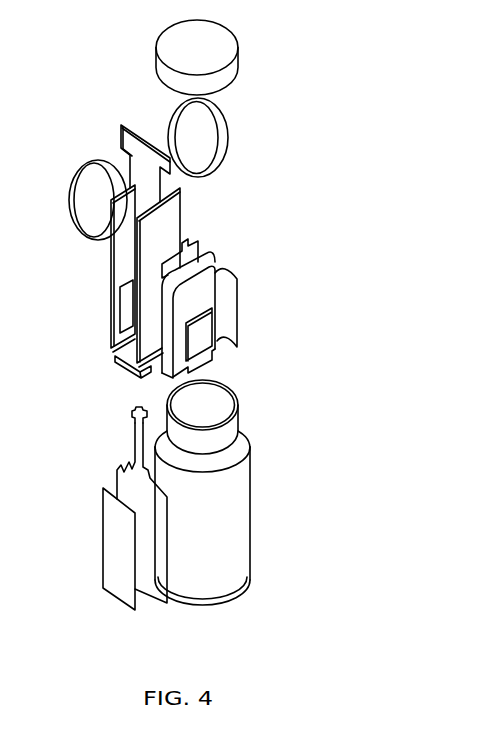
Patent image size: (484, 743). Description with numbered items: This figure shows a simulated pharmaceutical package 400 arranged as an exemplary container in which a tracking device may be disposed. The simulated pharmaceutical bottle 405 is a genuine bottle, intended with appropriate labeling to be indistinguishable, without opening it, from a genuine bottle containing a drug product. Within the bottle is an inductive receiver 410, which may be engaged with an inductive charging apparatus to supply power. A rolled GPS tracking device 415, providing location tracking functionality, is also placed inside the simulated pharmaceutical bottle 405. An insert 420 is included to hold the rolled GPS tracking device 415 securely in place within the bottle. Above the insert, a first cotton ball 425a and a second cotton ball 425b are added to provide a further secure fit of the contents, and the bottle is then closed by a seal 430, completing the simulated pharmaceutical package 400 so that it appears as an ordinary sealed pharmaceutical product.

The simulated pharmaceutical package 400 is at (402, 61).
The simulated pharmaceutical bottle 405 is at (250, 477).
The inductive receiver 410 is at (103, 547).
The rolled GPS tracking device 415 is at (237, 308).
The insert 420 is at (182, 222).
The cotton ball 425a is at (228, 158).
The cotton ball 425b is at (69, 210).
The seal 430 is at (239, 60).